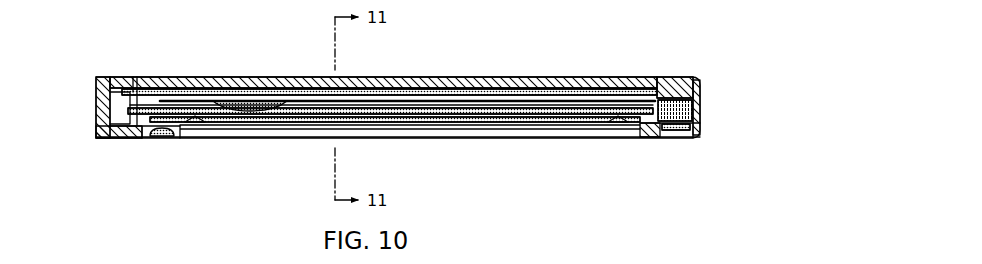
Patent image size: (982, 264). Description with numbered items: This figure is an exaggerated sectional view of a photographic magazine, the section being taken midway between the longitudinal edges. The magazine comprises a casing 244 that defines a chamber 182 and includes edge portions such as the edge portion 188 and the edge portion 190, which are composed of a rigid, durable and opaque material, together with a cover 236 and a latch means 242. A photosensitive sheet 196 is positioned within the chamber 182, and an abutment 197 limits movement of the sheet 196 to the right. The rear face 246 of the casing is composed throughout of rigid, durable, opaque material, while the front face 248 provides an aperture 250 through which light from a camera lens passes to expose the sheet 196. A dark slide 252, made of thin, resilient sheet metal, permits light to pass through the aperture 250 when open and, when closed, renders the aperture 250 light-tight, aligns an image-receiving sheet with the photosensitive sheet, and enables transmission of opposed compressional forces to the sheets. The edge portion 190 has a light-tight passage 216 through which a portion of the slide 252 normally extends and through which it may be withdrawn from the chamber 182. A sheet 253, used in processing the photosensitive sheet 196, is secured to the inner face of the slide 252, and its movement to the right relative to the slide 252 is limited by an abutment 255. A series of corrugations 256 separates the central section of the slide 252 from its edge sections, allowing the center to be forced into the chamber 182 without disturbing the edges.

The cover 236 is at (90, 91).
The edge portion 188 is at (124, 103).
The chamber 182 is at (161, 103).
The rear face 246 is at (400, 78).
The photosensitive sheet 196 is at (478, 84).
The abutment 197 is at (656, 92).
The edge portion 190 is at (700, 130).
The light-tight passage 216 is at (675, 131).
The abutment 255 is at (657, 123).
The corrugations 256 is at (190, 138).
The front face 248 is at (315, 137).
The casing 244 is at (503, 142).
The latch means 242 is at (153, 138).
The aperture 250 is at (175, 140).
The sheet 253 is at (403, 120).
The dark slide 252 is at (465, 123).